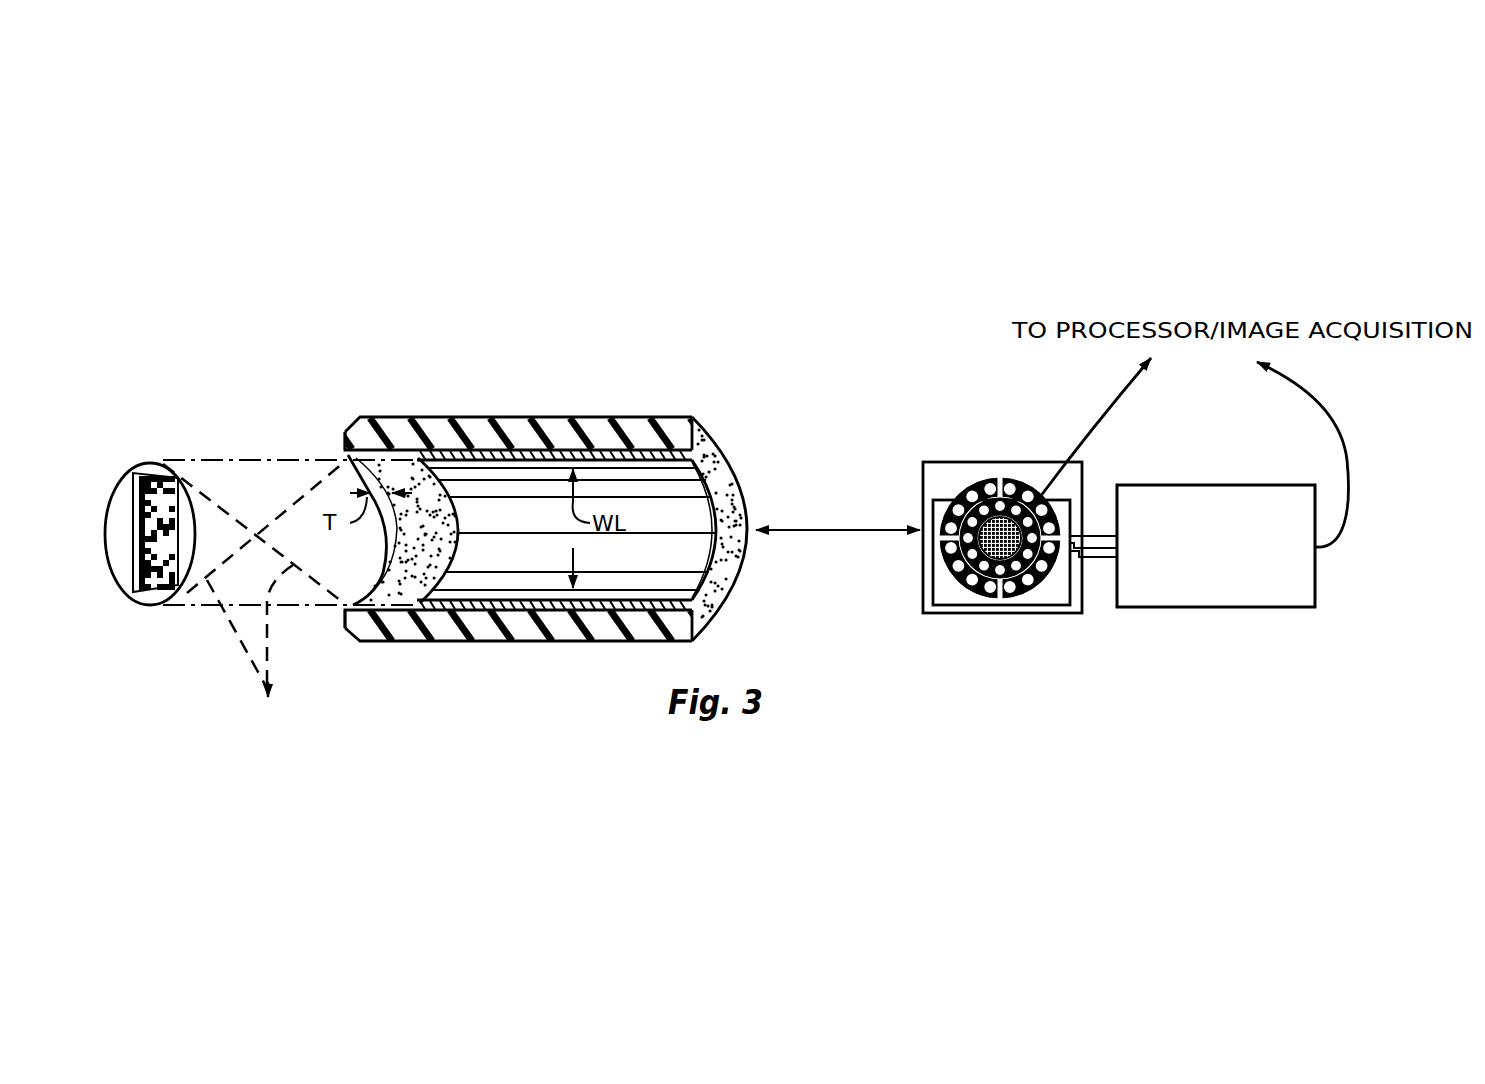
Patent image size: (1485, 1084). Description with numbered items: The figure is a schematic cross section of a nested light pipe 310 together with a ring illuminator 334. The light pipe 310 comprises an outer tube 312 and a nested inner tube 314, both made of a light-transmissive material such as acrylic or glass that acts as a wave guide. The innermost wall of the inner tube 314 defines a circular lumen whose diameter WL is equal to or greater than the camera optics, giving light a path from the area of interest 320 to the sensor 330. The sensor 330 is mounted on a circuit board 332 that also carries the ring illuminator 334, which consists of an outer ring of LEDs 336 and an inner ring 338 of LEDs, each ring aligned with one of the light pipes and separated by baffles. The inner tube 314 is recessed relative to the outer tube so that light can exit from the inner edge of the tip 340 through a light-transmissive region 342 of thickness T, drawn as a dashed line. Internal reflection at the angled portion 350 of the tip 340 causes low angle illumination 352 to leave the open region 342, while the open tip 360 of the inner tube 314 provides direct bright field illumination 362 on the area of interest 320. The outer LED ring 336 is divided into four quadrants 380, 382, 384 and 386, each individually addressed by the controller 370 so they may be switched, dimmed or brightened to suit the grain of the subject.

The light pipe 310 is at (468, 650).
The outer tube 312 is at (573, 630).
The inner tube 314 is at (623, 622).
The area of interest 320 is at (122, 558).
The sensor 330 is at (1005, 482).
The circuit board 332 is at (940, 479).
The ring illuminator 334 is at (928, 568).
The outer ring of LEDs 336 is at (1040, 594).
The inner ring of LEDs 338 is at (1046, 582).
The tip 340 is at (353, 640).
The light-transmissive region 342 is at (386, 548).
The angled portion 350 is at (343, 440).
The low angle illumination 352 is at (253, 595).
The open tip 360 is at (402, 643).
The bright field illumination 362 is at (305, 458).
The controller 370 is at (1291, 485).
The quadrant 380 is at (1046, 494).
The quadrant 382 is at (962, 493).
The quadrant 384 is at (965, 592).
The quadrant 386 is at (1070, 578).